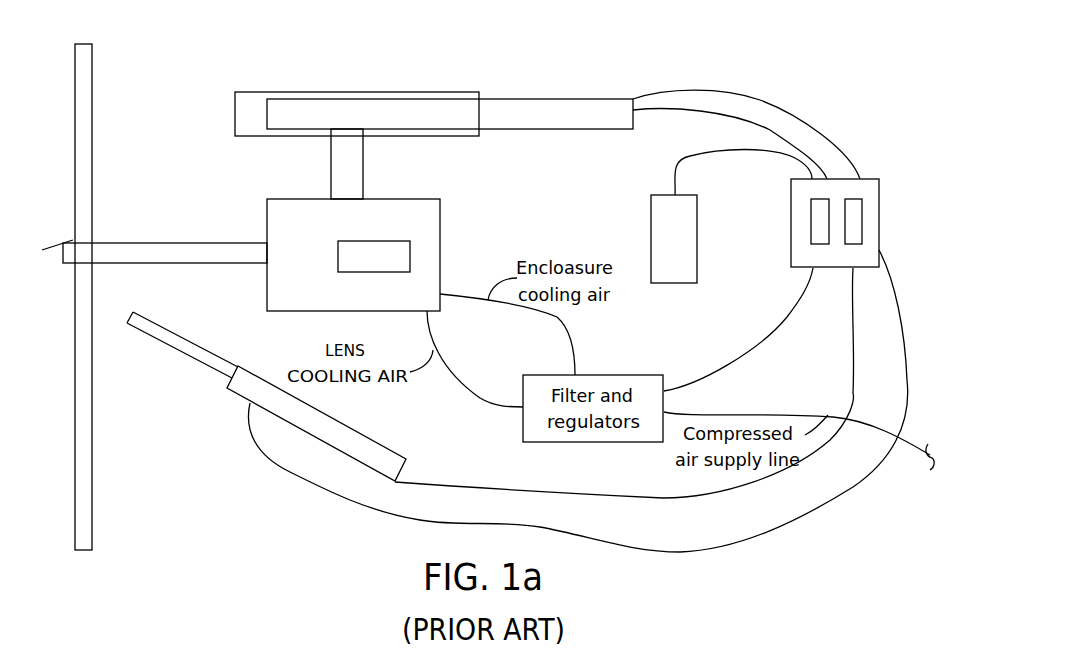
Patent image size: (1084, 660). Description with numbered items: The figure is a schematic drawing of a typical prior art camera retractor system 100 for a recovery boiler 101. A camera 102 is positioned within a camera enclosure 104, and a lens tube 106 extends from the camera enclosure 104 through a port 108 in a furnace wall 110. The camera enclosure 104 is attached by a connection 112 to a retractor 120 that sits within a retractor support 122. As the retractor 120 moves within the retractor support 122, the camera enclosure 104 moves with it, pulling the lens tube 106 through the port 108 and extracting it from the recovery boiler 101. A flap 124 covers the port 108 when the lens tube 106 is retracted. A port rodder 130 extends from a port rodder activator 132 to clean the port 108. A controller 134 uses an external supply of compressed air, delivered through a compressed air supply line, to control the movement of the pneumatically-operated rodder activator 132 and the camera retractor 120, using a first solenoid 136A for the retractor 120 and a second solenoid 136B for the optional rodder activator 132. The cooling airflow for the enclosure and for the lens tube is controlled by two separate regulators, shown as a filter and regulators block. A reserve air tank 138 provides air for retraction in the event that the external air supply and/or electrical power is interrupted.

The camera retractor system 100 is at (545, 46).
The recovery boiler 101 is at (68, 150).
The camera 102 is at (368, 241).
The camera enclosure 104 is at (393, 199).
The lens tube 106 is at (147, 265).
The port 108 is at (72, 262).
The furnace wall 110 is at (74, 487).
The connection 112 is at (331, 170).
The retractor 120 is at (403, 99).
The retractor support 122 is at (300, 91).
The flap 124 is at (73, 240).
The port rodder 130 is at (185, 357).
The port rodder activator 132 is at (262, 372).
The controller 134 is at (867, 179).
The first solenoid 136A is at (811, 229).
The second solenoid 136B is at (862, 219).
The reserve air tank 138 is at (651, 232).